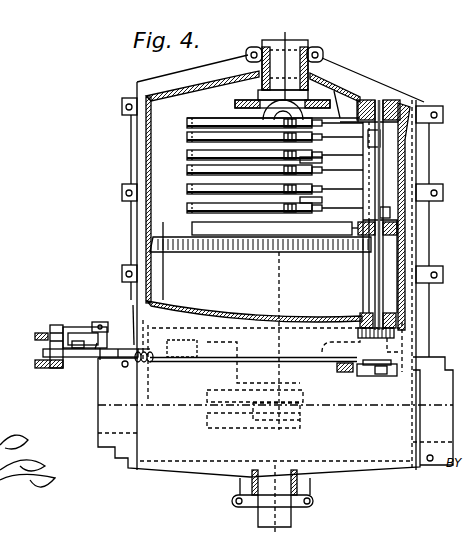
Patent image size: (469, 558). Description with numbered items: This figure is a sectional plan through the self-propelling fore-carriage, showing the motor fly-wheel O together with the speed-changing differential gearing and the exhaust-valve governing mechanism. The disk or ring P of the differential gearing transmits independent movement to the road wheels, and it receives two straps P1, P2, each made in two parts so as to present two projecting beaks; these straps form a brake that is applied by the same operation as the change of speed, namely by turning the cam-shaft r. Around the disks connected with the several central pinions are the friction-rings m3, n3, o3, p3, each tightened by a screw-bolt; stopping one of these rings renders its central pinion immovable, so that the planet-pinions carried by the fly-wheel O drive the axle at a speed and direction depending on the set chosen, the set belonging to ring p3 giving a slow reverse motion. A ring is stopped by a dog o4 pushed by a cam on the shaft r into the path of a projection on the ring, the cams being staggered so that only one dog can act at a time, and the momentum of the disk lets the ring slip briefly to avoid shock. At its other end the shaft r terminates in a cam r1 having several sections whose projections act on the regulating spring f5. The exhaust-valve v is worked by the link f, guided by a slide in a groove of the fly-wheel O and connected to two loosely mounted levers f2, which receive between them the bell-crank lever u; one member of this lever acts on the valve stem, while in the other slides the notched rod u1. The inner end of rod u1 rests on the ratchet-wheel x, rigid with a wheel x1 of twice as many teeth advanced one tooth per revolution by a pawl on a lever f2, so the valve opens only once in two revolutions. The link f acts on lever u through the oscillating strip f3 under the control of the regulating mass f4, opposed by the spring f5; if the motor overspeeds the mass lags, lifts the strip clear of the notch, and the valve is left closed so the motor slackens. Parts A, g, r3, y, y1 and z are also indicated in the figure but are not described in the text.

The shaft A is at (281, 283).
The disk or wheel of the differential gearing P is at (221, 118).
The strap P2 is at (186, 121).
The strap P1 is at (187, 136).
The friction-ring m3 is at (187, 153).
The friction-ring n3 is at (187, 170).
The friction-ring o3 is at (187, 189).
The friction-ring p3 is at (187, 208).
The dog o4 is at (322, 157).
The connecting rods g is at (380, 210).
The shaft r is at (374, 284).
The fly-wheel O is at (260, 326).
The rack r3 is at (360, 331).
The cam r1 is at (373, 375).
The block y is at (167, 360).
The link y1 is at (262, 361).
The lower block z is at (212, 414).
The ratchet-wheel x is at (43, 352).
The wheel x1 is at (36, 364).
The bell-crank lever u is at (90, 333).
The rod u1 is at (82, 343).
The exhaust-valve v is at (101, 323).
The link f is at (118, 355).
The levers f2 is at (97, 344).
The oscillating strip f3 is at (100, 366).
The regulating mass f4 is at (130, 319).
The spring f5 is at (145, 363).